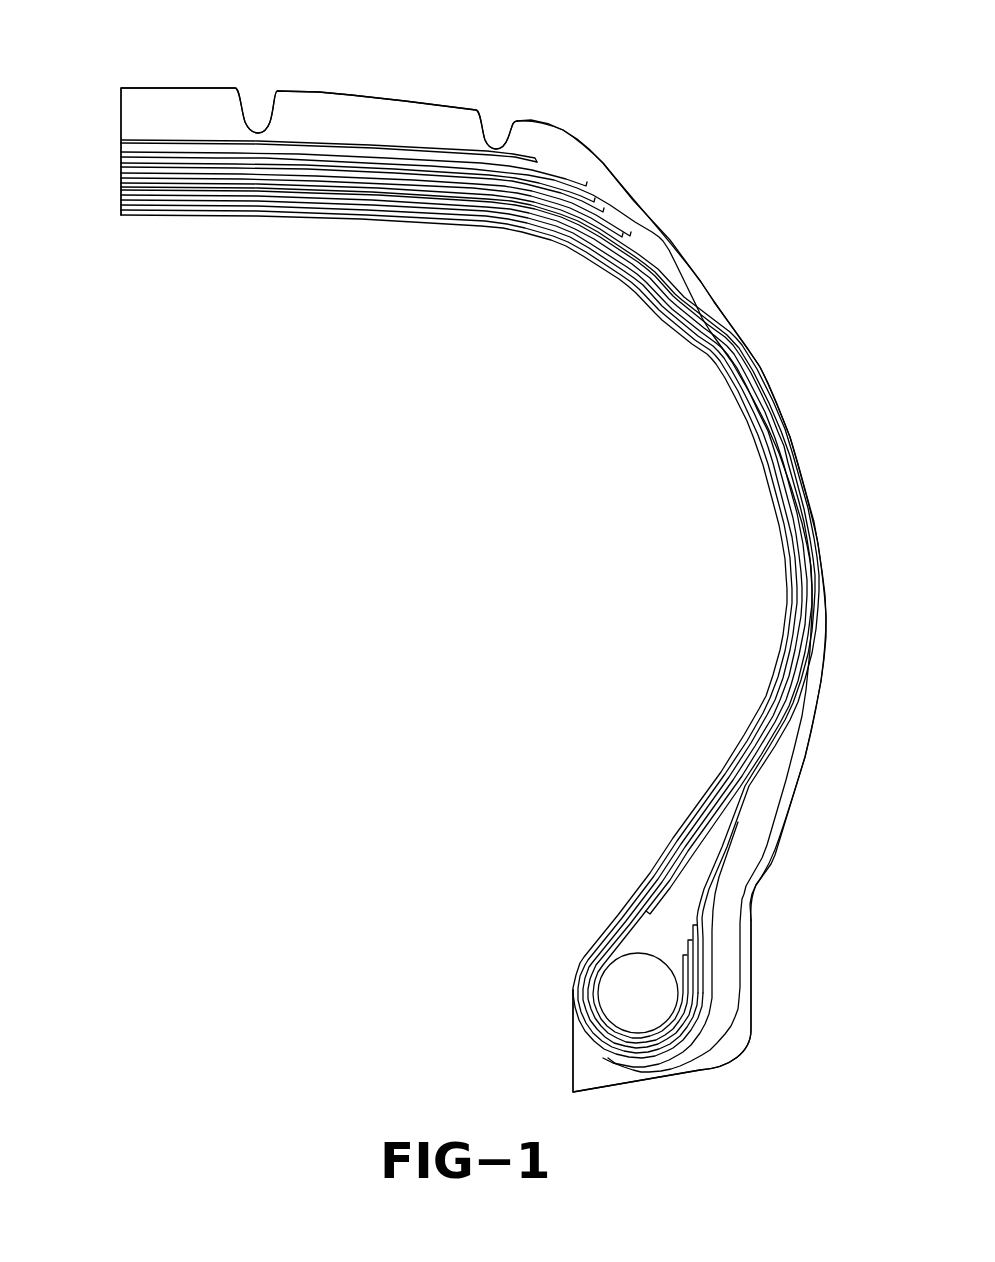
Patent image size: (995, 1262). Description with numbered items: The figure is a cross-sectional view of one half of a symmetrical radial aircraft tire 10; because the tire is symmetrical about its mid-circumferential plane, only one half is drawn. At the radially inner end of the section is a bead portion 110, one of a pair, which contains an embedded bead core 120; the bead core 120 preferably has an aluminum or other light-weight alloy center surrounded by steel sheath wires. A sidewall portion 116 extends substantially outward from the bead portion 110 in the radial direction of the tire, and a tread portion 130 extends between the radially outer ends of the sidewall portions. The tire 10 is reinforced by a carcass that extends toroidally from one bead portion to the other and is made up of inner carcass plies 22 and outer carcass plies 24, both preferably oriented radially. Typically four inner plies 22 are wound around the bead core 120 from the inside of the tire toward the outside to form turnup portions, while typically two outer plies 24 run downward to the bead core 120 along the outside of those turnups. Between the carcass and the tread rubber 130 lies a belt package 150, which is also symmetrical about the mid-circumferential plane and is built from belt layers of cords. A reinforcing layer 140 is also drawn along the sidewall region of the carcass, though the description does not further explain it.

The radial aircraft tire 10 is at (86, 100).
The inner carcass plies 22 is at (786, 542).
The outer carcass plies 24 is at (710, 895).
The bead portion 110 is at (672, 1082).
The sidewall portion 116 is at (748, 362).
The bead core 120 is at (628, 988).
The tread portion 130 is at (326, 112).
The chafer reinforcement 140 is at (737, 425).
The belt package 150 is at (216, 170).